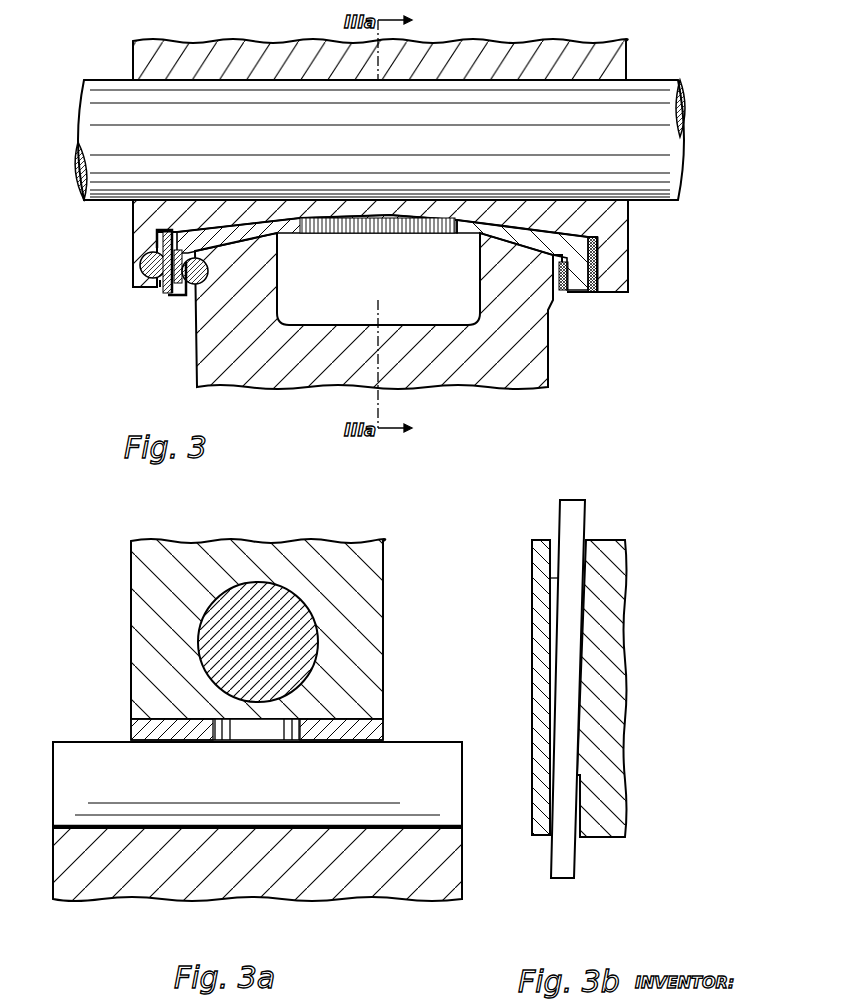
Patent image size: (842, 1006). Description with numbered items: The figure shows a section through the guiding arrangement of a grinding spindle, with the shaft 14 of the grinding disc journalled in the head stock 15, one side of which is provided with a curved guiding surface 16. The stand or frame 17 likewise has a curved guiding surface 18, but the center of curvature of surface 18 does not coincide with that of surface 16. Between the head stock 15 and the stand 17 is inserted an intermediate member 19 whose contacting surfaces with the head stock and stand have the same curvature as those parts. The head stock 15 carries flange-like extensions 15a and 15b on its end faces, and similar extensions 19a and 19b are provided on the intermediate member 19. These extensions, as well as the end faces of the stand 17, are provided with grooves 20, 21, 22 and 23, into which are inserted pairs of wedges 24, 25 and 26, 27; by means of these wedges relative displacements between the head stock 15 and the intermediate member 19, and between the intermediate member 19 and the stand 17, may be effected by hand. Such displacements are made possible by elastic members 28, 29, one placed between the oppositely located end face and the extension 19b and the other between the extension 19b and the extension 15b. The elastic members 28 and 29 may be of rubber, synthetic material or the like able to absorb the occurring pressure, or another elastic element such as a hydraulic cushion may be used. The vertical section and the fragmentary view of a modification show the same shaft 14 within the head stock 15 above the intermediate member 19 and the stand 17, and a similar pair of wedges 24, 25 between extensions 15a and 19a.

In FIG. 3, the shaft 14 is at (122, 96).
In FIG. 3A, the shaft 14 is at (212, 641).
In FIG. 3, the head stock 15 is at (620, 66).
In FIG. 3A, the head stock 15 is at (148, 577).
In FIG. 3, the flange-like extension 15a is at (138, 277).
In FIG. 3B, the flange-like extension 15a is at (540, 608).
In FIG. 3, the flange-like extension 15b is at (610, 264).
In FIG. 3, the curved guiding surface 16 is at (492, 242).
In FIG. 3, the stand 17 is at (548, 382).
In FIG. 3A, the stand 17 is at (127, 893).
In FIG. 3, the curved guiding surface 18 is at (515, 250).
In FIG. 3, the intermediate member 19 is at (600, 226).
In FIG. 3A, the intermediate member 19 is at (148, 728).
In FIG. 3, the extension 19a is at (166, 293).
In FIG. 3B, the extension 19a is at (612, 553).
In FIG. 3, the extension 19b is at (590, 284).
In FIG. 3, the groove 20 is at (138, 290).
In FIG. 3, the groove 21 is at (174, 255).
In FIG. 3, the groove 22 is at (181, 288).
In FIG. 3, the groove 23 is at (208, 270).
In FIG. 3, the wedge 24 is at (142, 258).
In FIG. 3B, the wedge 24 is at (558, 863).
In FIG. 3, the wedge 25 is at (166, 246).
In FIG. 3B, the wedge 25 is at (570, 523).
In FIG. 3, the wedge 26 is at (205, 282).
In FIG. 3, the wedge 27 is at (200, 255).
In FIG. 3, the elastic member 28 is at (562, 292).
In FIG. 3, the elastic member 29 is at (598, 280).